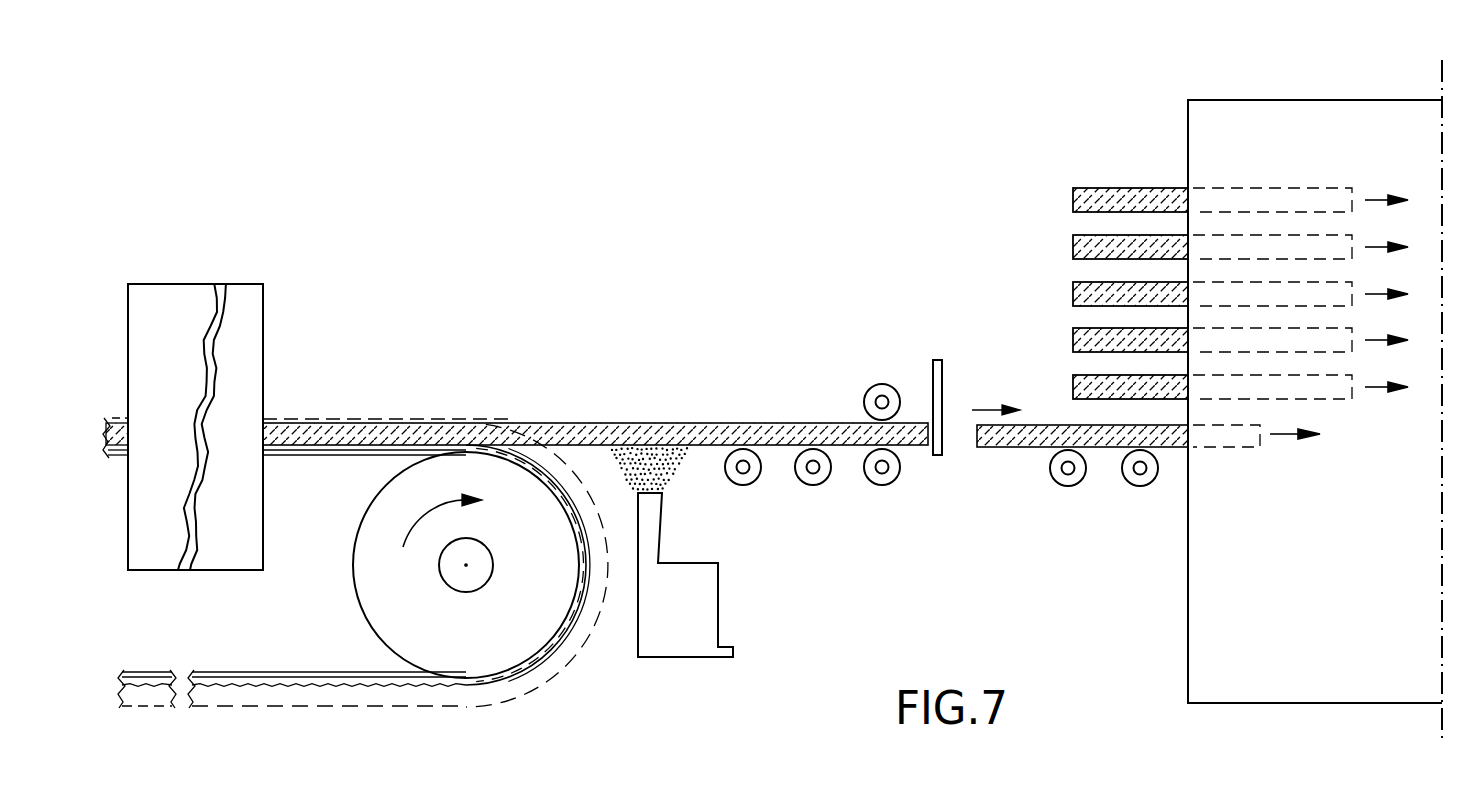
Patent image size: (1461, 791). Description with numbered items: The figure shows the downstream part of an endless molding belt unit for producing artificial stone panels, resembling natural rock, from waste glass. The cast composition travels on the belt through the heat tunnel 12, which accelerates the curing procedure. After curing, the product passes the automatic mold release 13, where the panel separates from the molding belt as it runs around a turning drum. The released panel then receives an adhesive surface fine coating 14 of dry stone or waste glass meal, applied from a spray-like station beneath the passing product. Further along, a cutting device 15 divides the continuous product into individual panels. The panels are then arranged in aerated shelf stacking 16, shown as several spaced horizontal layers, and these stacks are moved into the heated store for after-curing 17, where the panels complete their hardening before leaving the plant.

The heat tunnel 12 is at (245, 323).
The automatic mold release 13 is at (540, 445).
The adhesive surface fine coating 14 is at (684, 606).
The cutting device 15 is at (933, 368).
The aerated shelf stacking 16 is at (1073, 292).
The after-curing in the heated store 17 is at (1236, 132).